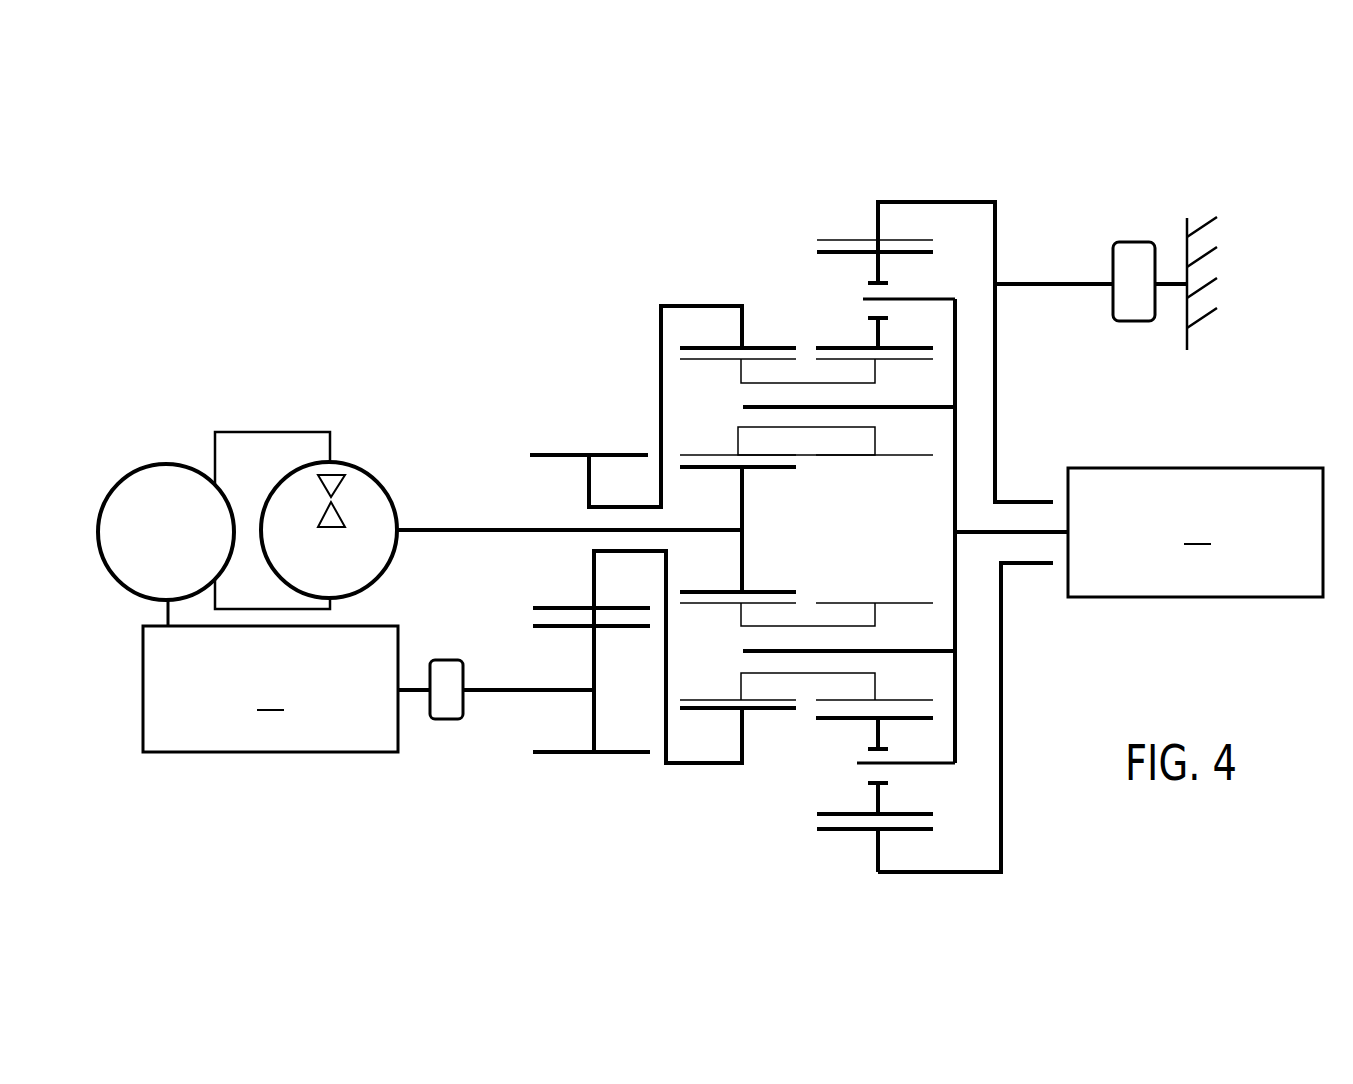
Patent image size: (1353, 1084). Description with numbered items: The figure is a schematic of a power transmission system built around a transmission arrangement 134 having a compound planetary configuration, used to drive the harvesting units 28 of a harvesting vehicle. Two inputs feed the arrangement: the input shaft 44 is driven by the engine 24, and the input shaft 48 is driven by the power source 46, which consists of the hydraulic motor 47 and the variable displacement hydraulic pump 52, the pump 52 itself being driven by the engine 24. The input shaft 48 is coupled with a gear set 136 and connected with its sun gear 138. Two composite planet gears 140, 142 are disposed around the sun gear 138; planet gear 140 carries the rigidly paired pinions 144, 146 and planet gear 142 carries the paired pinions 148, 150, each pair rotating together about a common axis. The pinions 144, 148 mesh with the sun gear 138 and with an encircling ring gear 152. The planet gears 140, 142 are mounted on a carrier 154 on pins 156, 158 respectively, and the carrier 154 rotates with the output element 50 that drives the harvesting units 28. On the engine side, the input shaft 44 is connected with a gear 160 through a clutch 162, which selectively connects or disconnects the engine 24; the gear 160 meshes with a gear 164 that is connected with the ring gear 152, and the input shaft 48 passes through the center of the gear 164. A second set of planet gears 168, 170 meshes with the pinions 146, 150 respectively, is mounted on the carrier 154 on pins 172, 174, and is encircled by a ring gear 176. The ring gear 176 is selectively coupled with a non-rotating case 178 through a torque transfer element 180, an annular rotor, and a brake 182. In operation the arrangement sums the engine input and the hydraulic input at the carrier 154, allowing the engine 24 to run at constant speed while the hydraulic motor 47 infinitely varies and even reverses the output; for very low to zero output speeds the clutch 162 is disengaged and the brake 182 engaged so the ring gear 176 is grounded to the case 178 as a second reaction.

The engine 24 is at (270, 689).
The harvesting units 28 is at (1195, 532).
The input shaft 44 is at (413, 688).
The power source 46 is at (284, 408).
The hydraulic motor 47 is at (366, 470).
The input shaft 48 is at (521, 527).
The output element 50 is at (986, 535).
The variable displacement hydraulic pump 52 is at (168, 464).
The transmission arrangement 134 is at (667, 256).
The gear set 136 is at (710, 292).
The sun gear 138 is at (778, 469).
The planet gear 140 is at (788, 381).
The planet gear 142 is at (816, 680).
The pinion 144 is at (714, 362).
The pinion 146 is at (907, 362).
The pinion 148 is at (712, 698).
The pinion 150 is at (843, 603).
The ring gear 152 is at (762, 346).
The carrier 154 is at (948, 491).
The pin 156 is at (907, 409).
The pin 158 is at (907, 653).
The gear 160 is at (563, 754).
The clutch 162 is at (446, 720).
The gear 164 is at (562, 453).
The planet gear 168 is at (907, 254).
The planet gear 170 is at (845, 813).
The pin 172 is at (907, 301).
The pin 174 is at (900, 766).
The ring gear 176 is at (856, 240).
The case 178 is at (1186, 253).
The torque transfer element 180 is at (1080, 283).
The brake 182 is at (1135, 322).